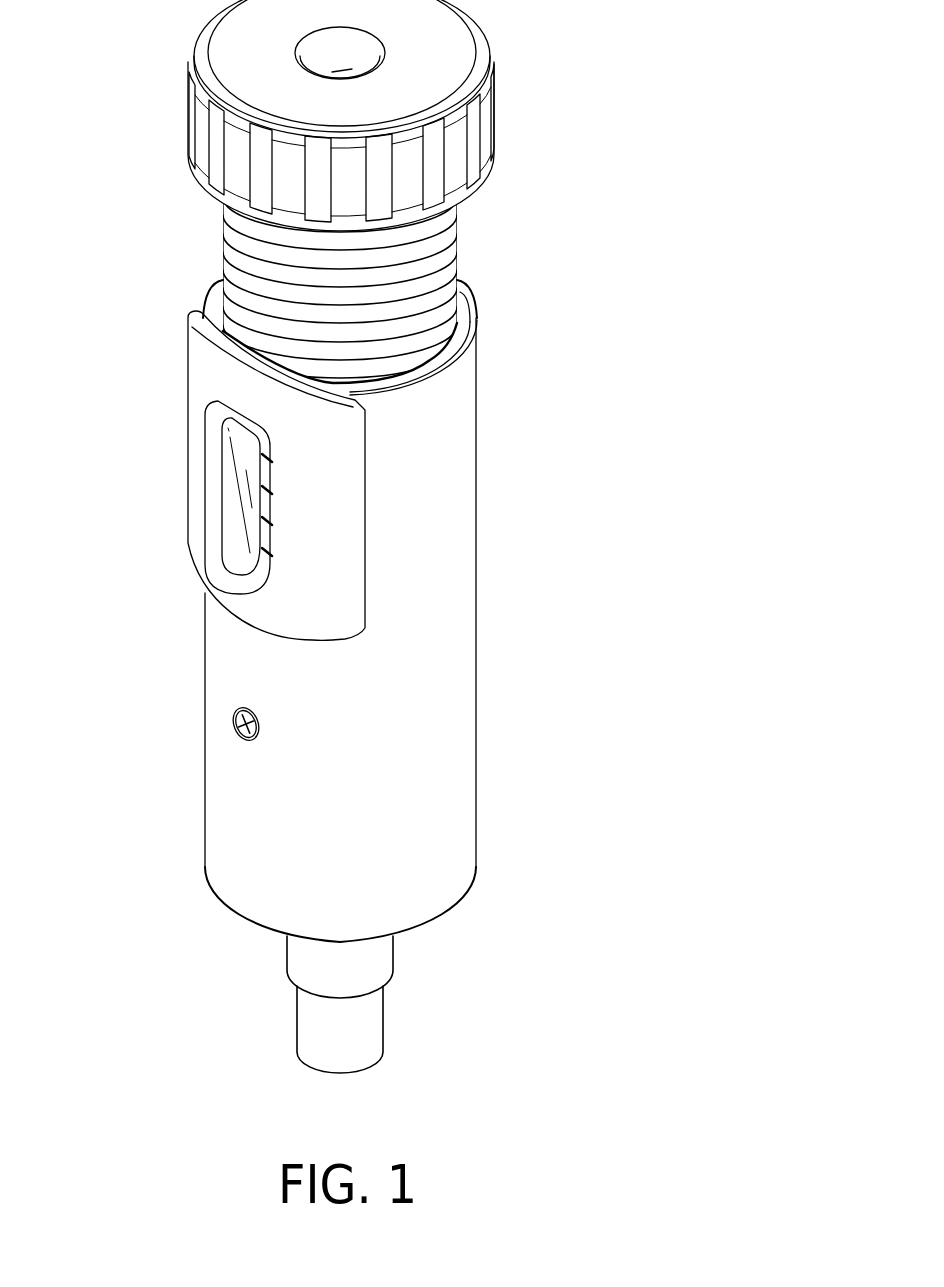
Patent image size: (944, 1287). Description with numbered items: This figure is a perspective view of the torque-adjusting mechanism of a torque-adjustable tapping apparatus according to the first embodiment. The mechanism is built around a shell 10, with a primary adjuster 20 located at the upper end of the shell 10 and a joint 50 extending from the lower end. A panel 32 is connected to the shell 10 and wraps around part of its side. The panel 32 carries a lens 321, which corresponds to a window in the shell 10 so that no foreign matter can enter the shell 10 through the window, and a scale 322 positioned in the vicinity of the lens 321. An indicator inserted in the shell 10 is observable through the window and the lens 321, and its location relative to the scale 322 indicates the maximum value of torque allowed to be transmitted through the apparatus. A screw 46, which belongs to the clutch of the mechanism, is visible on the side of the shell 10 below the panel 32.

The shell 10 is at (487, 572).
The primary adjuster 20 is at (530, 170).
The panel 32 is at (324, 534).
The lens 321 is at (237, 515).
The scale 322 is at (302, 558).
The screw 46 is at (233, 713).
The joint 50 is at (277, 1028).